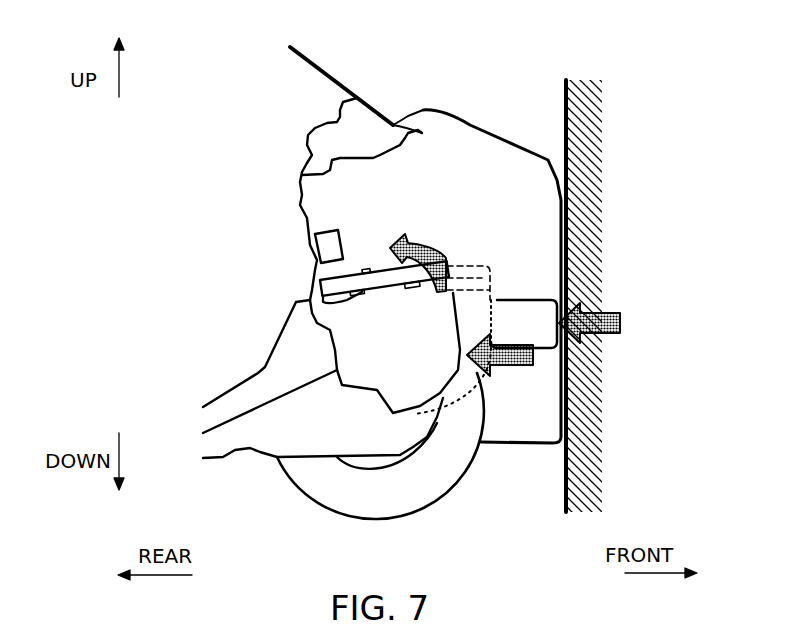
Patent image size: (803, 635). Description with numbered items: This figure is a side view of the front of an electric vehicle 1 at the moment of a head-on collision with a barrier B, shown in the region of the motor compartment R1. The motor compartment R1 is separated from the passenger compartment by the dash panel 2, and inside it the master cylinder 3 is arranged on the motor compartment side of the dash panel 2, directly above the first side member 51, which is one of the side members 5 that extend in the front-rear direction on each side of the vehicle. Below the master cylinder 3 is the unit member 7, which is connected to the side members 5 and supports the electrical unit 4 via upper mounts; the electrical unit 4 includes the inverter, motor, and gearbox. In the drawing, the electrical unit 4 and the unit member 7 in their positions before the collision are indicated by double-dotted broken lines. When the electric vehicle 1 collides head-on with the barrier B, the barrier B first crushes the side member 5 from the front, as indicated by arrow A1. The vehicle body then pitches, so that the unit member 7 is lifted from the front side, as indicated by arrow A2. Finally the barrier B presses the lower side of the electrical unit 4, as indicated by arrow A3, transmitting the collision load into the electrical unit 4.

The electric vehicle 1 is at (544, 58).
The dash panel 2 is at (300, 205).
The master cylinder 3 is at (316, 253).
The electrical unit 4 is at (318, 332).
The side member 5 is at (573, 289).
The first side member 51 is at (537, 298).
The unit member 7 is at (351, 275).
The arrow A1 is at (605, 336).
The arrow A2 is at (428, 255).
The arrow A3 is at (512, 367).
The motor compartment R1 is at (546, 211).
The barrier B is at (565, 472).